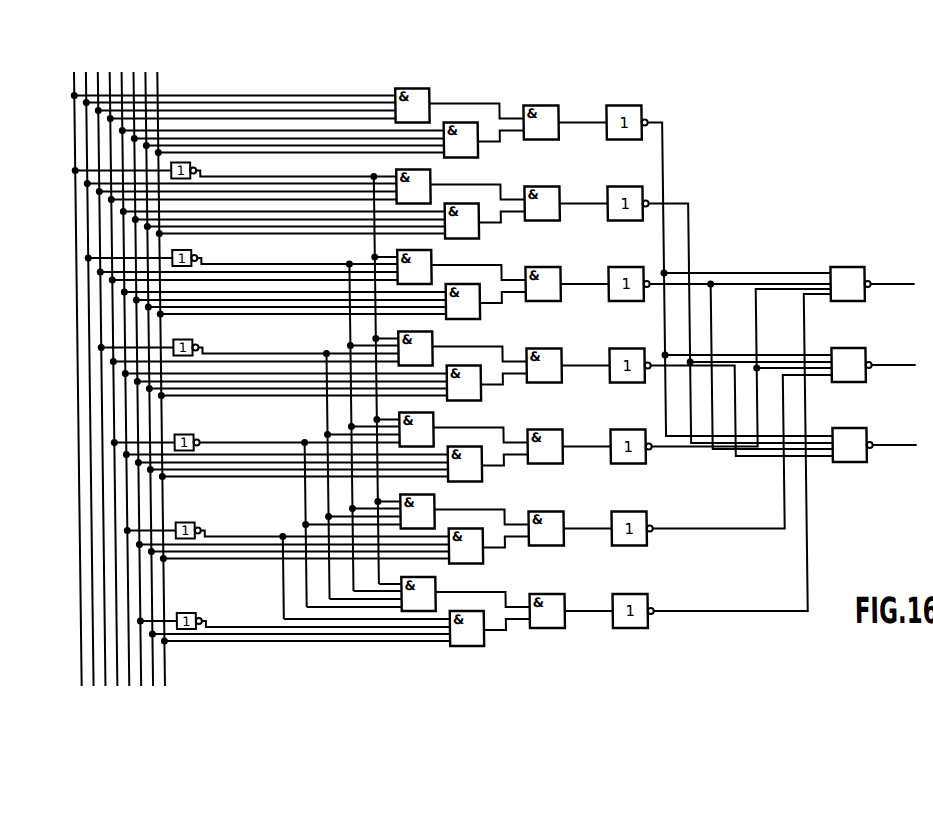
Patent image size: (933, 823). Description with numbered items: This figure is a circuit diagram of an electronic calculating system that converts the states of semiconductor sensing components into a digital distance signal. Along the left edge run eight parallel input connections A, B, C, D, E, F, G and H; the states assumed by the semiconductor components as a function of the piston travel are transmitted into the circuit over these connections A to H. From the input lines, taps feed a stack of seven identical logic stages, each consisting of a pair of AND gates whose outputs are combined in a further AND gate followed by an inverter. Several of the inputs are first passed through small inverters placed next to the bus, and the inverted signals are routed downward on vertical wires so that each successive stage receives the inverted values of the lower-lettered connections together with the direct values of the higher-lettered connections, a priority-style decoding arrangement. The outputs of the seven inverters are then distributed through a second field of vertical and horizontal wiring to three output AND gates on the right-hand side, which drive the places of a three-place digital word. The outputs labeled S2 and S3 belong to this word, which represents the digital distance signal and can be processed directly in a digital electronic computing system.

The connection A is at (78, 367).
The connection B is at (90, 367).
The connection C is at (101, 367).
The connection D is at (113, 367).
The connection E is at (125, 367).
The connection F is at (137, 367).
The connection G is at (149, 367).
The connection H is at (160, 367).
The digital word output S2 is at (875, 363).
The digital word output S3 is at (875, 363).